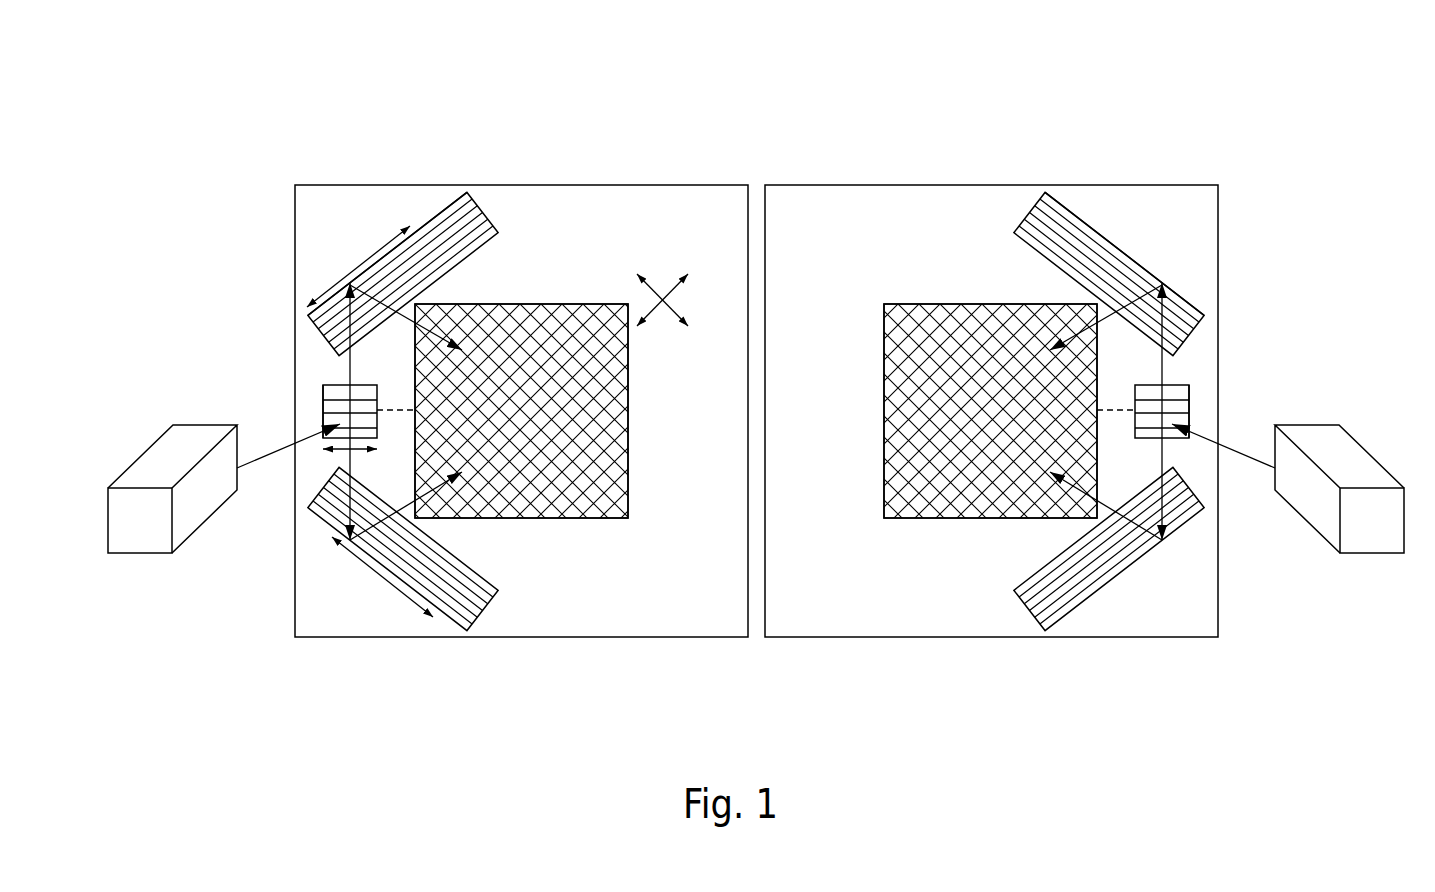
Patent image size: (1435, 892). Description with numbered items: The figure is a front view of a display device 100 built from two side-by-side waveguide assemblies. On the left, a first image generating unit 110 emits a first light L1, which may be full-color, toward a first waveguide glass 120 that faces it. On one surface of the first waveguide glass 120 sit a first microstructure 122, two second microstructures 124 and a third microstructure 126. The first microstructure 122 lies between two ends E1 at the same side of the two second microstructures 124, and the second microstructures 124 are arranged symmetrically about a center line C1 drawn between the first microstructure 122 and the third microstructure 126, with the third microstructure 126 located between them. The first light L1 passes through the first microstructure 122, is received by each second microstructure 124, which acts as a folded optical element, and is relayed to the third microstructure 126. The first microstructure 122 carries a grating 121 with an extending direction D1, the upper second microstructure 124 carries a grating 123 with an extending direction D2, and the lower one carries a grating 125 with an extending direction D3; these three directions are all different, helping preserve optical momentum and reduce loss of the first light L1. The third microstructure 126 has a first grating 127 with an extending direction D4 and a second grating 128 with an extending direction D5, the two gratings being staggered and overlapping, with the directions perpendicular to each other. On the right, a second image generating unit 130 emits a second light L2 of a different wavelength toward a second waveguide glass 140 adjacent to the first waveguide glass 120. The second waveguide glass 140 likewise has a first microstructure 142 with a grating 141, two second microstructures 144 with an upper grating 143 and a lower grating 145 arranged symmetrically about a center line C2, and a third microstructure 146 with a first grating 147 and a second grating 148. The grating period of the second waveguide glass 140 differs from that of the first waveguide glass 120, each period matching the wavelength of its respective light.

The display device 100 is at (118, 69).
The first image generating unit 110 is at (140, 553).
The first waveguide glass 120 is at (435, 185).
The grating 121 is at (335, 397).
The first microstructure 122 is at (323, 422).
The grating 123 is at (435, 242).
The second microstructure 124 is at (360, 275).
The grating 125 is at (407, 549).
The third microstructure 126 is at (527, 303).
The first grating 127 is at (580, 350).
The second grating 128 is at (613, 303).
The second image generating unit 130 is at (1373, 552).
The second waveguide glass 140 is at (1077, 185).
The grating 141 is at (1177, 395).
The first microstructure 142 is at (1189, 420).
The grating 143 is at (1080, 242).
The second microstructure 144 is at (1152, 273).
The grating 145 is at (1118, 550).
The third microstructure 146 is at (992, 305).
The first grating 147 is at (945, 335).
The second grating 148 is at (900, 305).
The center line C1 is at (396, 410).
The center line C2 is at (1115, 410).
The ends E1 is at (352, 366).
The first light L1 is at (258, 457).
The second light L2 is at (1242, 460).
The extending direction D1 is at (310, 466).
The extending direction D2 is at (383, 247).
The extending direction D3 is at (383, 578).
The extending direction D4 is at (683, 292).
The extending direction D5 is at (683, 309).